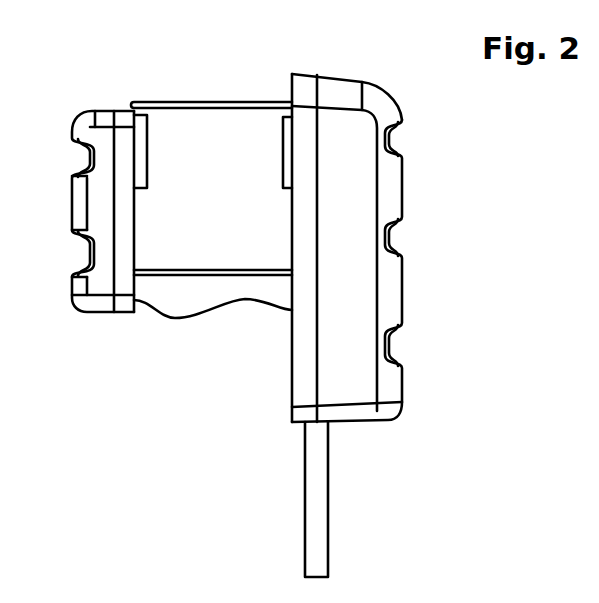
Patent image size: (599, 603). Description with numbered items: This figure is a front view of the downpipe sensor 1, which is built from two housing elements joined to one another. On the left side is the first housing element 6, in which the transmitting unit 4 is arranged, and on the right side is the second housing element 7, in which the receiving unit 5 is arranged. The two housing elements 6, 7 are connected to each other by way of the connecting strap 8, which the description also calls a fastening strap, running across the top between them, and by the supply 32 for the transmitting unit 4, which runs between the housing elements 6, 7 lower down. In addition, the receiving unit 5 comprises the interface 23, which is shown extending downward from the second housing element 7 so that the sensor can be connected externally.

The fastening clip 1 is at (108, 68).
The transmitting unit 4 is at (102, 208).
The receiving unit 5 is at (345, 200).
The first housing element 6 is at (102, 315).
The second housing element 7 is at (357, 423).
The connecting strap 8 is at (223, 143).
The interface 23 is at (317, 499).
The supply 32 is at (220, 308).